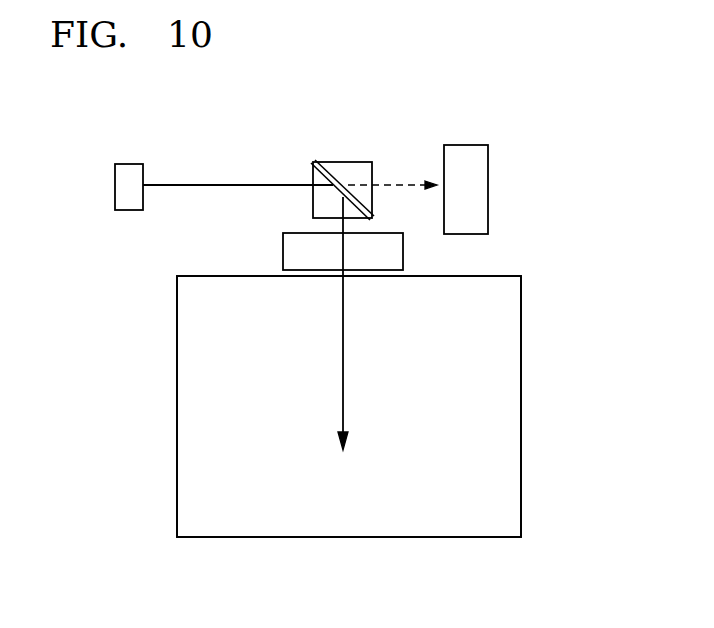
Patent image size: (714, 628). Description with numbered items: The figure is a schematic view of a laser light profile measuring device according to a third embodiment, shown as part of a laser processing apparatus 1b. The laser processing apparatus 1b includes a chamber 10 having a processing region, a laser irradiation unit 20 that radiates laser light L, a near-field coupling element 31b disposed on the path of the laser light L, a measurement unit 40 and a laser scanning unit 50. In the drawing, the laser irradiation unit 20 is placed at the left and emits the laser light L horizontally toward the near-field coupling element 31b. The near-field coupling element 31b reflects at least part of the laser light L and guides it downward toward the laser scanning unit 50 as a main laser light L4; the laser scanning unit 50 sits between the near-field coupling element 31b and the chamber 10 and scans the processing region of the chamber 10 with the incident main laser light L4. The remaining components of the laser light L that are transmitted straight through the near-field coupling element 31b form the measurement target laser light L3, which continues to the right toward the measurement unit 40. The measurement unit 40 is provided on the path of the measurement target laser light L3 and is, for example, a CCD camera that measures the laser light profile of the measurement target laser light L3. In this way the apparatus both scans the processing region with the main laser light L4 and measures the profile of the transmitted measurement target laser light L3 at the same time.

The laser processing apparatus 1b is at (110, 331).
The chamber 10 is at (521, 303).
The laser irradiation unit 20 is at (128, 163).
The laser light L is at (226, 185).
The near-field coupling element 31b is at (352, 168).
The measurement target laser light L3 is at (410, 185).
The measurement unit 40 is at (488, 190).
The laser scanning unit 50 is at (283, 255).
The main laser light L4 is at (345, 341).